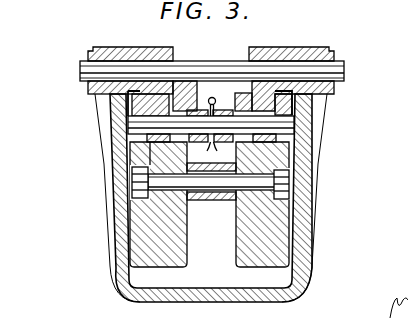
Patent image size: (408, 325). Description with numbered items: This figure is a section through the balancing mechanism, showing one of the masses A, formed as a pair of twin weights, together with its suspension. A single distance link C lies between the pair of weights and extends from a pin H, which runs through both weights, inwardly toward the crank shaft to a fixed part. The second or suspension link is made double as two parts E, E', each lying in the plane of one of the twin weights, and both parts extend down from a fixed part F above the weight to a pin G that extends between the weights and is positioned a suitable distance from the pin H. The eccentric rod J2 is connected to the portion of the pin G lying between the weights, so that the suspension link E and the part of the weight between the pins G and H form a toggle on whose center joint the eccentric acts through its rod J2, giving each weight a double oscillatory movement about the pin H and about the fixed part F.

The mass A is at (157, 246).
The pivoted link C is at (208, 202).
The second pivoted link E is at (298, 98).
The second pivoted link part E' is at (120, 98).
The fixed part F is at (233, 66).
The pin G is at (284, 124).
The pin H is at (288, 183).
The eccentric rod J2 is at (197, 96).